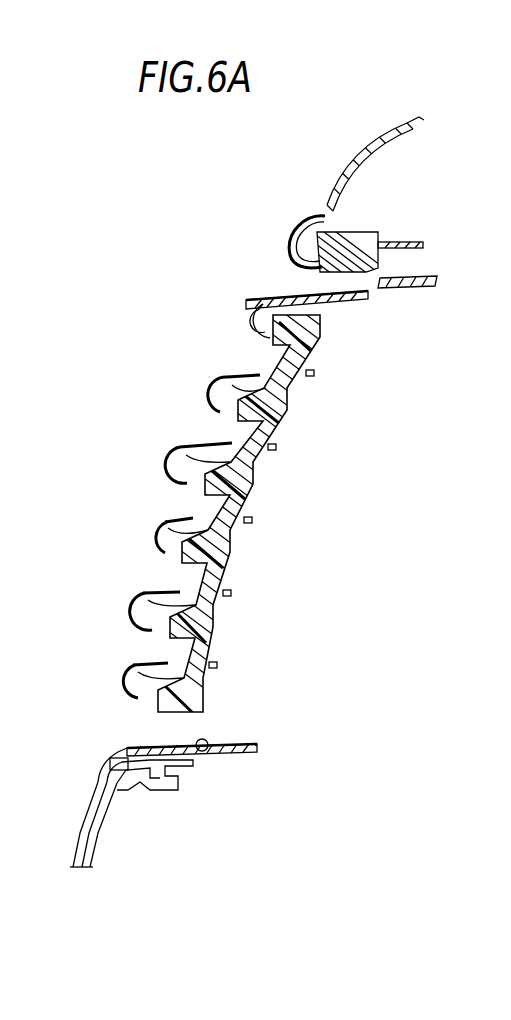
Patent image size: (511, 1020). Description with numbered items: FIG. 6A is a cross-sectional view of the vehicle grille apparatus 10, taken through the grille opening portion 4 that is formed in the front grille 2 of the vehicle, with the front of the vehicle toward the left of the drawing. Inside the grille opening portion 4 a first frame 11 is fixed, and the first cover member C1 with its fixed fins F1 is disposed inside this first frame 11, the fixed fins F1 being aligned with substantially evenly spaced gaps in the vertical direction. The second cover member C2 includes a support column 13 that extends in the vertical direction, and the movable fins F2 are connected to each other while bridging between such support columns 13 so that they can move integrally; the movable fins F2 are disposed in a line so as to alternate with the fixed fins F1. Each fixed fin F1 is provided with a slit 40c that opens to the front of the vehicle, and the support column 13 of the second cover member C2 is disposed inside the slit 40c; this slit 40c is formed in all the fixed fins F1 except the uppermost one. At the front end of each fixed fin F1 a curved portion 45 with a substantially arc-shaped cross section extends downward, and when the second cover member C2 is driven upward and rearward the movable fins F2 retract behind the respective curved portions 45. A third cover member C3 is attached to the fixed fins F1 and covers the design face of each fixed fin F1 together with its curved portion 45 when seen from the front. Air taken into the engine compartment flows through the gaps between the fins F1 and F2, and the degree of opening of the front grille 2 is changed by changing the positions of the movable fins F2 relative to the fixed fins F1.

The vehicle grille apparatus 10 is at (207, 227).
The first frame 11 is at (436, 273).
The support column 13 is at (186, 648).
The curved portion 45 is at (247, 326).
The front grille 2 is at (97, 788).
The grille opening portion 4 is at (203, 752).
The slit 40c is at (311, 377).
The fixed fin F1 is at (314, 374).
The first cover member C1 is at (261, 519).
The second cover member C2 is at (323, 323).
The third cover member C3 is at (254, 303).
The movable fin F2 is at (284, 302).